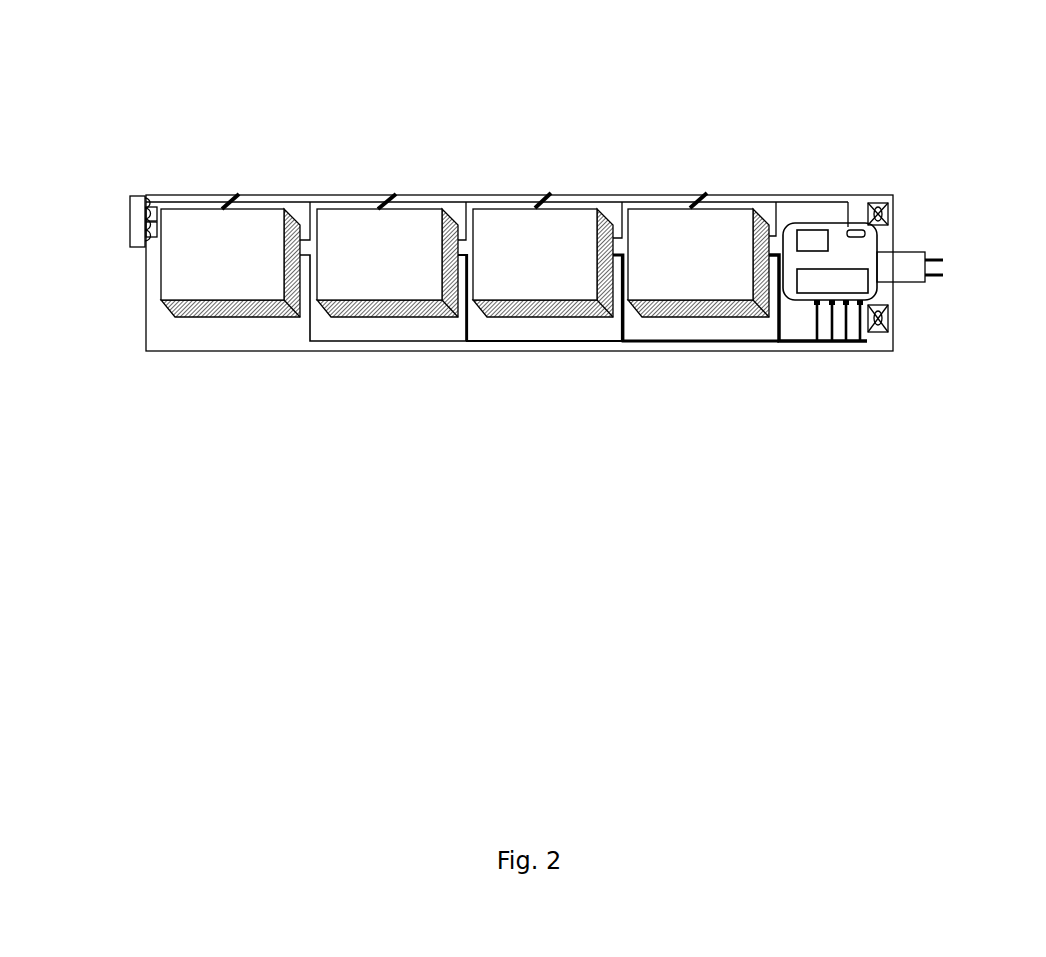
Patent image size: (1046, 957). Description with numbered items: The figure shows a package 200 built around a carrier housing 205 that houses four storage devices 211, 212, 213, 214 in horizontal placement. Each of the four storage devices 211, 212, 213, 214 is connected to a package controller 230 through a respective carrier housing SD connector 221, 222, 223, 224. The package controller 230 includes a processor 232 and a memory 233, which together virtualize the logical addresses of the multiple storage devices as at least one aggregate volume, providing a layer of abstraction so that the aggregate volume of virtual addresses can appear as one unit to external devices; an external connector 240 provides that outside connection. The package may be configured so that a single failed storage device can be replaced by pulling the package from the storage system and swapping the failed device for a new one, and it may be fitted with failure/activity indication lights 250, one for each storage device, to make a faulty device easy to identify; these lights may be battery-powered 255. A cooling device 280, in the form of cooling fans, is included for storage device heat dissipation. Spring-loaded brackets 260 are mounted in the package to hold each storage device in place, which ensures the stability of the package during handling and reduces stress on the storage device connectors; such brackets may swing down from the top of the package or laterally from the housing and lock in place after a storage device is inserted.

The package 200 is at (518, 137).
The carrier housing 205 is at (208, 195).
The storage device 211 is at (230, 263).
The storage device 212 is at (387, 263).
The storage device 213 is at (543, 263).
The storage device 214 is at (698, 263).
The carrier housing SD connector 221 is at (310, 322).
The carrier housing SD connector 222 is at (462, 322).
The carrier housing SD connector 223 is at (618, 322).
The carrier housing SD connector 224 is at (777, 322).
The package controller 230 is at (791, 201).
The processor 232 is at (858, 283).
The memory 233 is at (808, 243).
The external connector 240 is at (910, 267).
The failure/activity indication lights 250 is at (132, 222).
The battery power 255 is at (855, 228).
The spring-loaded brackets 260 is at (537, 197).
The cooling device 280 is at (878, 212).